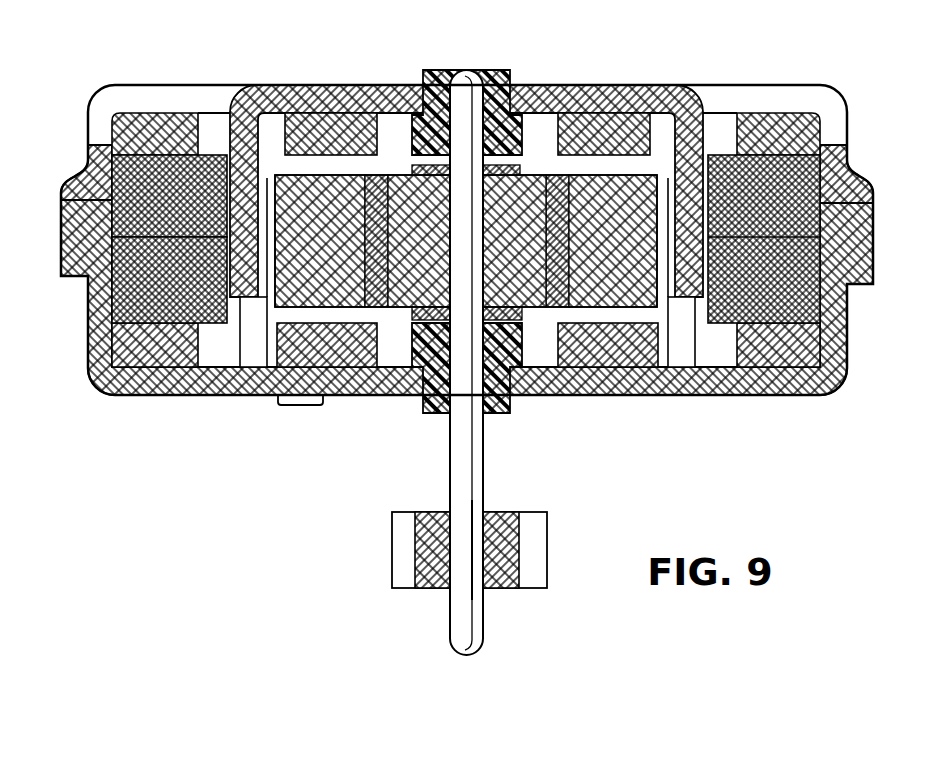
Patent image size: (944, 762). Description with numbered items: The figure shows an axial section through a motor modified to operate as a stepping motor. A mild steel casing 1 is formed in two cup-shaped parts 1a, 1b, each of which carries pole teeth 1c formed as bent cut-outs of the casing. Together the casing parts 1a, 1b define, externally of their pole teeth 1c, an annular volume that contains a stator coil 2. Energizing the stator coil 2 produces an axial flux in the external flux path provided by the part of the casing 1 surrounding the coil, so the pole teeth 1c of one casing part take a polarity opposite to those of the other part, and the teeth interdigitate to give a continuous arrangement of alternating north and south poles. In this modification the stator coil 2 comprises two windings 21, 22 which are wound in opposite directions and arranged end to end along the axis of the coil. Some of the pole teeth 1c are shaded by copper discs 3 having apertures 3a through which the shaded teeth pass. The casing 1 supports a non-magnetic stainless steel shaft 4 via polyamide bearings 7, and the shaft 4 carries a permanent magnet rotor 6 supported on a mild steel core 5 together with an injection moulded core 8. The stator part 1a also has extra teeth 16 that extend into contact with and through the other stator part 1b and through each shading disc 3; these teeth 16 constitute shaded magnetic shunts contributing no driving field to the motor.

The casing 1 is at (773, 93).
The casing part 1a is at (838, 128).
The casing part 1b is at (848, 362).
The pole teeth 1c is at (230, 138).
The stator coil 2 is at (817, 297).
The winding 21 is at (112, 162).
The winding 22 is at (123, 292).
The copper discs 3 is at (160, 113).
The apertures 3a is at (270, 128).
The shaft 4 is at (473, 474).
The mild steel core 5 is at (466, 244).
The permanent magnet rotor 6 is at (602, 295).
The bearings 7 is at (493, 75).
The injection moulded core 8 is at (527, 193).
The extra teeth 16 is at (297, 406).